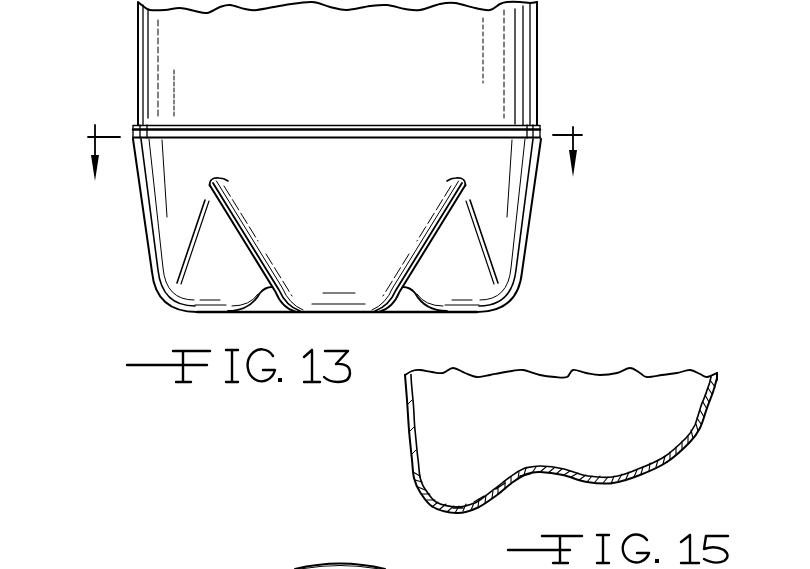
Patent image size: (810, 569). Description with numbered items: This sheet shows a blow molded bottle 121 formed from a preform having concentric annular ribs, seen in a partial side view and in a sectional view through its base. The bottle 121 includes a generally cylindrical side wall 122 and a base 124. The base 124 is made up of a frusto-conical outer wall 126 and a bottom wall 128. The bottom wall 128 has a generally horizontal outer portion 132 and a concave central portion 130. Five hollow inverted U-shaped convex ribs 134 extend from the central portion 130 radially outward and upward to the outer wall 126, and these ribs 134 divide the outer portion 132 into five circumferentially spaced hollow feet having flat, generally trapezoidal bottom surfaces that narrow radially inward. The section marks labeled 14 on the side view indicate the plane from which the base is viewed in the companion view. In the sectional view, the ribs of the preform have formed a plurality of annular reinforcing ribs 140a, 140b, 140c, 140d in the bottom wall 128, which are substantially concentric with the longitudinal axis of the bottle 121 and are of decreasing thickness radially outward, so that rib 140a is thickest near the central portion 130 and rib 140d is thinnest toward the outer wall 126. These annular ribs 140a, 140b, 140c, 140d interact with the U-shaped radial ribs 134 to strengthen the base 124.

In FIG. 13, the bottle 121 is at (112, 57).
In FIG. 13, the side wall 122 is at (538, 57).
In FIG. 15, the side wall 122 is at (413, 566).
In FIG. 13, the base 124 is at (548, 231).
In FIG. 13, the outer wall 126 is at (527, 266).
In FIG. 15, the outer wall 126 is at (404, 438).
In FIG. 13, the bottom wall 128 is at (478, 328).
In FIG. 15, the central portion 130 is at (552, 489).
In FIG. 15, the outer portion 132 is at (455, 516).
In FIG. 13, the ribs 134 is at (452, 263).
In FIG. 15, the ribs 134 is at (697, 444).
In FIG. 15, the annular reinforcing rib 140a is at (458, 503).
In FIG. 15, the annular reinforcing rib 140b is at (478, 496).
In FIG. 15, the annular reinforcing rib 140c is at (500, 483).
In FIG. 15, the annular reinforcing rib 140d is at (523, 477).
In FIG. 13, the section line 14 is at (339, 170).